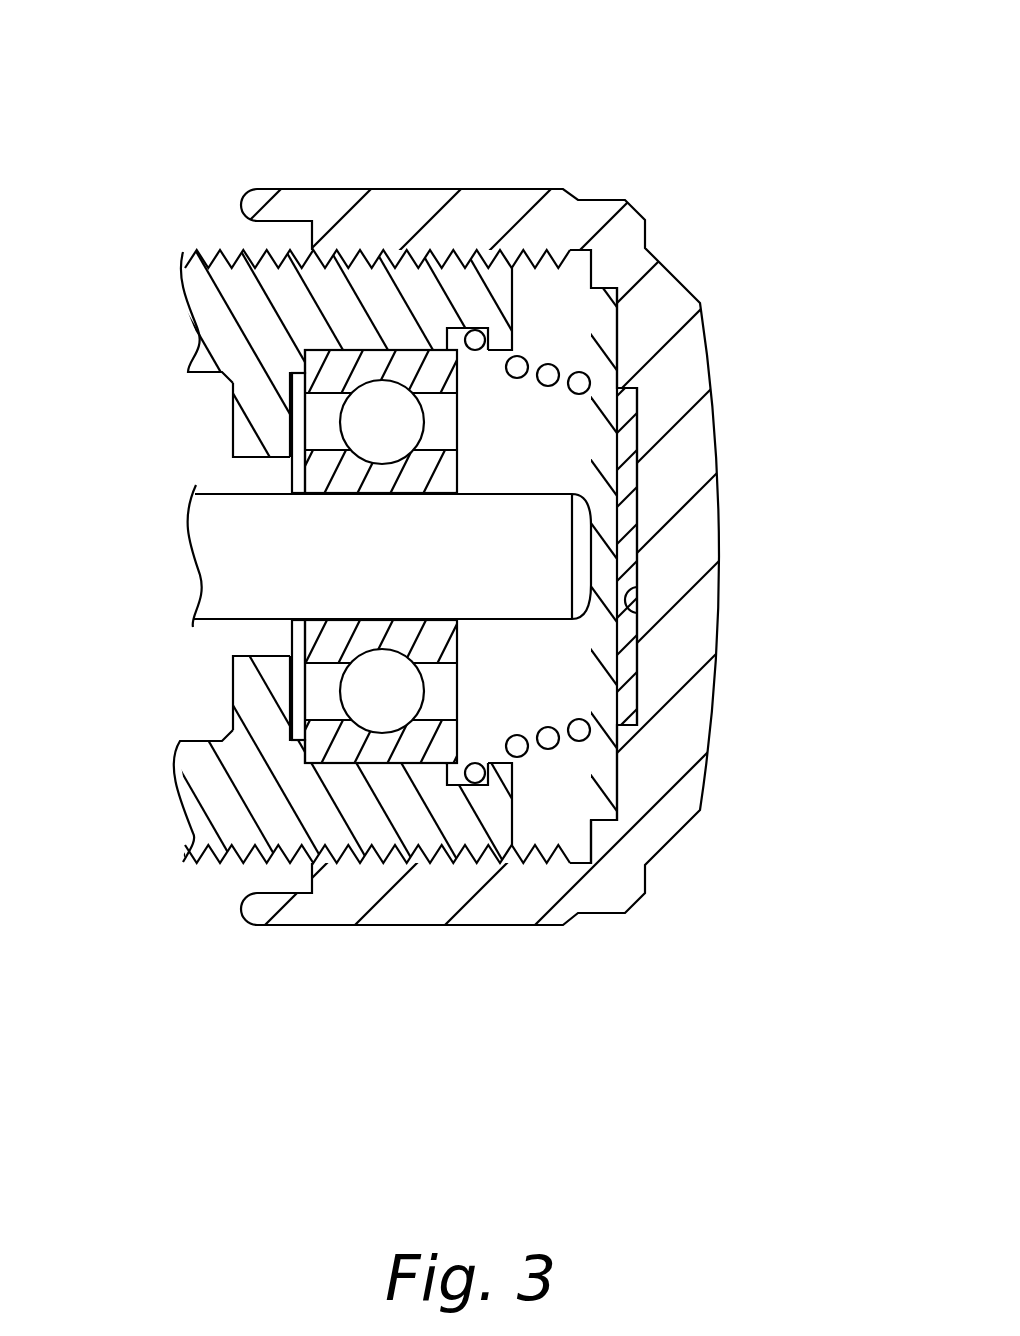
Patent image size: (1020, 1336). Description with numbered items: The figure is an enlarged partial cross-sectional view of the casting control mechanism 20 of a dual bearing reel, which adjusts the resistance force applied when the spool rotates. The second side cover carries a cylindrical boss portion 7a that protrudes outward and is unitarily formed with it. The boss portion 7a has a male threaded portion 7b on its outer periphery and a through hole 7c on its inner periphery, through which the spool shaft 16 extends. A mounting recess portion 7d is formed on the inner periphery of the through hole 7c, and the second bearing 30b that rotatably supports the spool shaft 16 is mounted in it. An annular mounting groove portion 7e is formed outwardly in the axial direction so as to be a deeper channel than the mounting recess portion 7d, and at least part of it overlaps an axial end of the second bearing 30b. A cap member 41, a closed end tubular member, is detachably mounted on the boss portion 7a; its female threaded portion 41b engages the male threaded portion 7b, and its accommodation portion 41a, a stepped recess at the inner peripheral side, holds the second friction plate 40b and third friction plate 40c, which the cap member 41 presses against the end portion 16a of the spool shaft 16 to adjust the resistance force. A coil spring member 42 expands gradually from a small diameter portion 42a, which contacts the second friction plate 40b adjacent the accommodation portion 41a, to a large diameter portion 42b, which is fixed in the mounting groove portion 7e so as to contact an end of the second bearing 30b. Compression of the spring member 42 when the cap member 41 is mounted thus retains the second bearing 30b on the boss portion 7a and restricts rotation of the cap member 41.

The casting control mechanism 20 is at (650, 137).
The boss portion 7a is at (230, 242).
The male threaded portion 7b is at (308, 250).
The through hole 7c is at (262, 458).
The mounting recess portion 7d is at (343, 350).
The mounting groove portion 7e is at (486, 338).
The spool shaft 16 is at (247, 585).
The first end portion 16a is at (538, 596).
The second bearing 30b is at (380, 710).
The second friction plate 40b is at (605, 367).
The third friction plate 40c is at (625, 483).
The cap member 41 is at (677, 560).
The accommodation portion 41a is at (645, 606).
The female threaded portion 41b is at (540, 847).
The spring member 42 is at (547, 762).
The small diameter portion 42a is at (595, 733).
The large diameter portion 42b is at (475, 777).